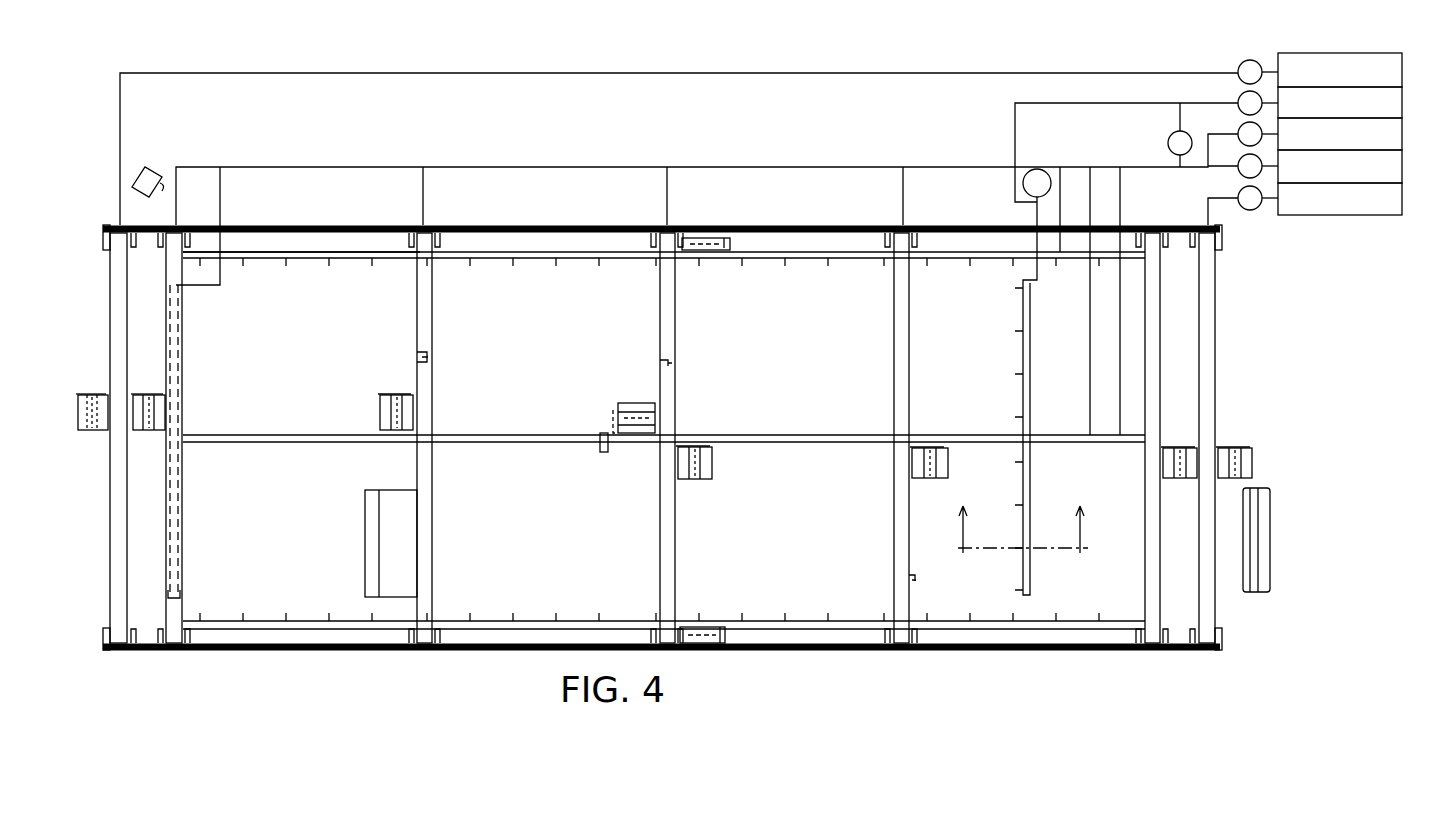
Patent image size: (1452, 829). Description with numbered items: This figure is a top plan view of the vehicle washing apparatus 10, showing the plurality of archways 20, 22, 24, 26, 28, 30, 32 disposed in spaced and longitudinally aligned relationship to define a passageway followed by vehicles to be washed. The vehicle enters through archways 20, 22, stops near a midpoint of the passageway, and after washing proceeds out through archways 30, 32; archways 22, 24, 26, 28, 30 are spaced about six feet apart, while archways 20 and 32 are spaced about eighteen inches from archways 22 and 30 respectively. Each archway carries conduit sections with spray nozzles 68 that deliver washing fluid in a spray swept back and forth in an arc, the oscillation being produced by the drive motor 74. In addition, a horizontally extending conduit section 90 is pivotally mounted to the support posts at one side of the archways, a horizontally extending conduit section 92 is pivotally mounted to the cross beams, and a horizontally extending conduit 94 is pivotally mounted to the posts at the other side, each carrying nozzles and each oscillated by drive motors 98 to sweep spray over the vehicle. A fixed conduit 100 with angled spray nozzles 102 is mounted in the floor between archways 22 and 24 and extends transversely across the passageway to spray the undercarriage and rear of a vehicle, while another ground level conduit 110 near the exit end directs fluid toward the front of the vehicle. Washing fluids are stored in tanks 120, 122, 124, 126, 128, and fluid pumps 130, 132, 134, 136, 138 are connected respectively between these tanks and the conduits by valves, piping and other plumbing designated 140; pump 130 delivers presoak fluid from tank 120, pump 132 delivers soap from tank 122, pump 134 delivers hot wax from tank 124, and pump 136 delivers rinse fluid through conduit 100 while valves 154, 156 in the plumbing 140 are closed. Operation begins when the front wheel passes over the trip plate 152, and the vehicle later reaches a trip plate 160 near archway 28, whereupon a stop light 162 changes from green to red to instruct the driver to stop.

The vehicle washing apparatus 10 is at (338, 657).
The archway 20 is at (1216, 334).
The archway 22 is at (1162, 332).
The archway 24 is at (894, 324).
The archway 26 is at (660, 304).
The archway 28 is at (416, 290).
The archway 30 is at (164, 305).
The archway 32 is at (110, 307).
The spray nozzles 68 is at (315, 266).
The drive motor 74 is at (150, 395).
The horizontally extending conduit section 90 is at (563, 617).
The horizontally extending conduit section 92 is at (507, 435).
The horizontally extending conduit 94 is at (664, 275).
The drive motors 98 is at (698, 260).
The conduit 100 is at (1030, 386).
The spray nozzles 102 is at (1014, 417).
The ground level conduit 110 is at (178, 394).
The tank 120 is at (1409, 208).
The tank 122 is at (1409, 179).
The tank 124 is at (1409, 146).
The tank 126 is at (1409, 114).
The tank 128 is at (1409, 81).
The fluid pump 130 is at (1264, 202).
The fluid pump 132 is at (1238, 198).
The fluid pump 134 is at (1240, 126).
The fluid pump 136 is at (1240, 95).
The fluid pump 138 is at (1240, 64).
The plumbing 140 is at (487, 63).
The trip plate 152 is at (1272, 530).
The valve 154 is at (1164, 146).
The valve 156 is at (1044, 170).
The trip plate 160 is at (365, 532).
The stop light 162 is at (154, 172).